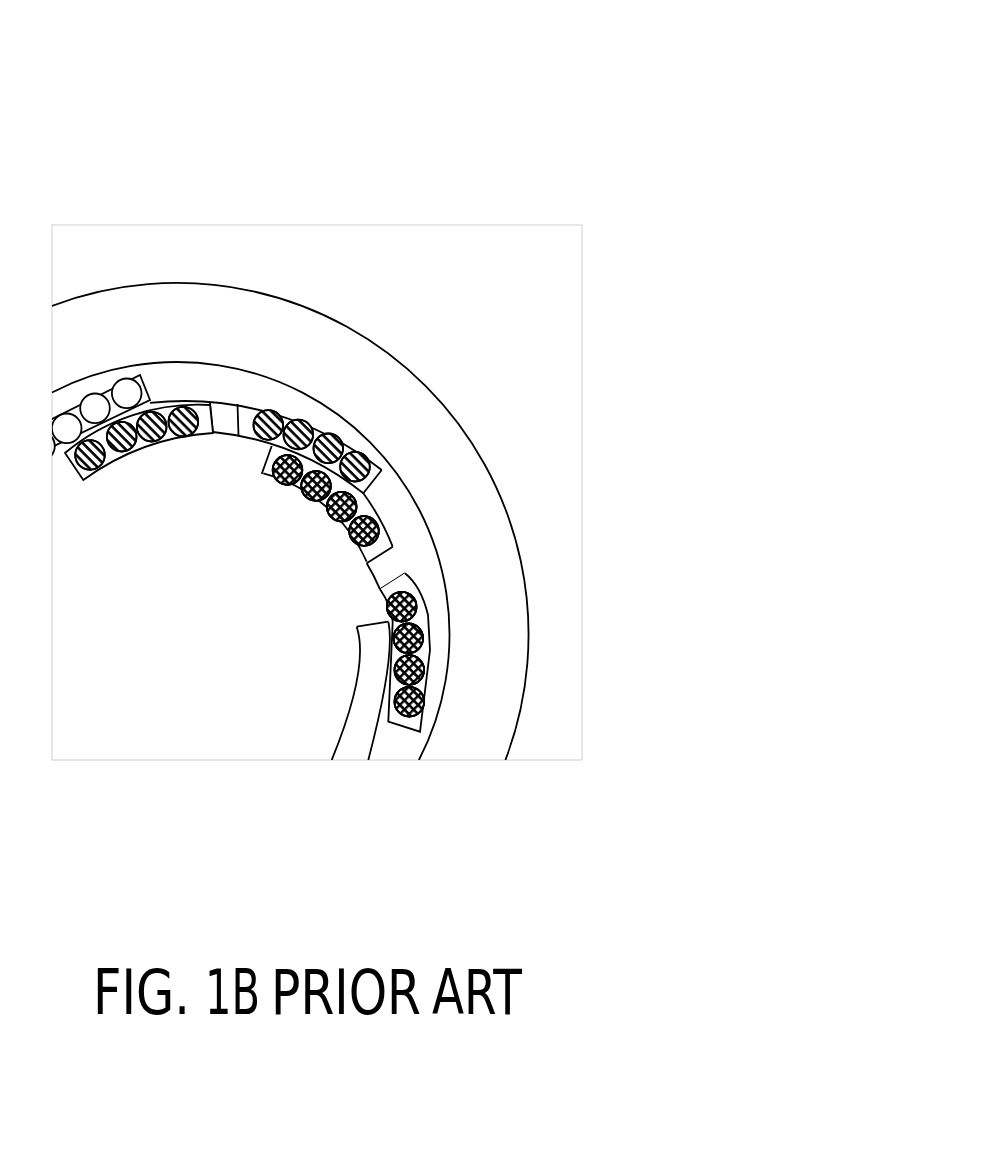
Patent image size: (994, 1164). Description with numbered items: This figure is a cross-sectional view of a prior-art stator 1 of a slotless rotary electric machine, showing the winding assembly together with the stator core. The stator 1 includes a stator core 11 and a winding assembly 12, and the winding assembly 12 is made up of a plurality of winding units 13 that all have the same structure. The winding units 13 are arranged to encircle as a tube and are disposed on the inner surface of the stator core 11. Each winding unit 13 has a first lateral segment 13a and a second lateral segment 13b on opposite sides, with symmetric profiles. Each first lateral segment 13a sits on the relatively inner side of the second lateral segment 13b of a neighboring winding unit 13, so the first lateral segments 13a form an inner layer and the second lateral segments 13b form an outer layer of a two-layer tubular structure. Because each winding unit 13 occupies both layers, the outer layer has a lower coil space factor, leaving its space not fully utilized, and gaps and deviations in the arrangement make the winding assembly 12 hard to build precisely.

The stator 1 is at (661, 42).
The stator core 11 is at (190, 305).
The winding assembly 12 is at (379, 442).
The winding unit 13 is at (247, 413).
The first lateral segment 13a is at (377, 520).
The second lateral segment 13b is at (425, 642).